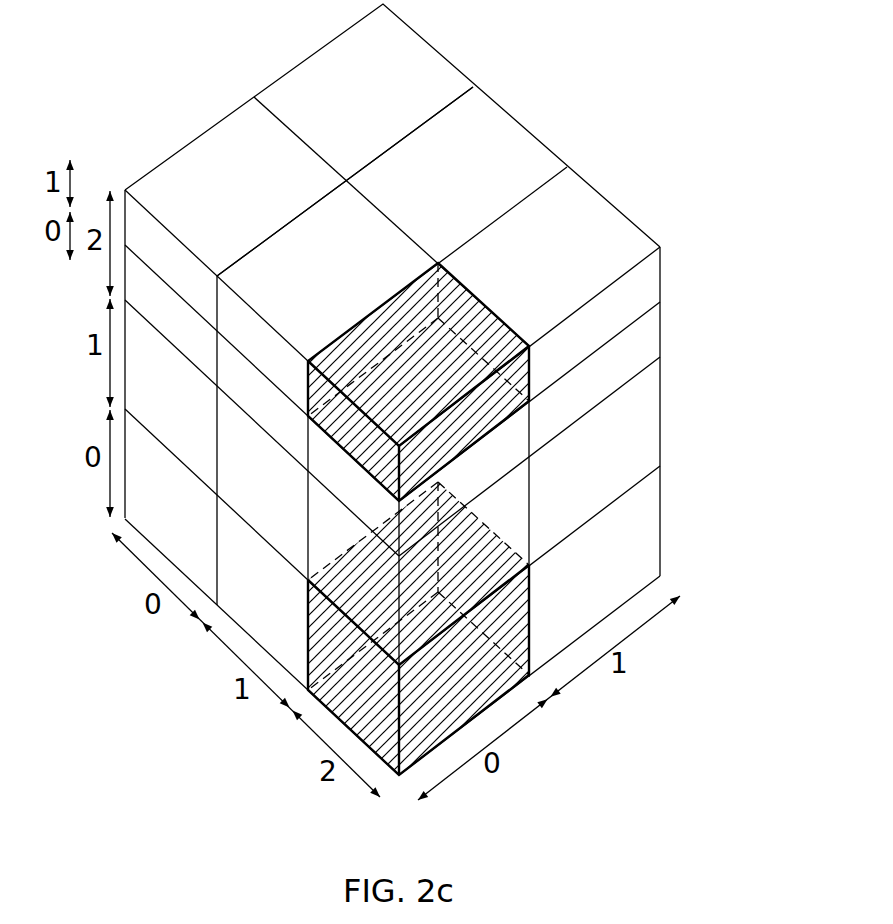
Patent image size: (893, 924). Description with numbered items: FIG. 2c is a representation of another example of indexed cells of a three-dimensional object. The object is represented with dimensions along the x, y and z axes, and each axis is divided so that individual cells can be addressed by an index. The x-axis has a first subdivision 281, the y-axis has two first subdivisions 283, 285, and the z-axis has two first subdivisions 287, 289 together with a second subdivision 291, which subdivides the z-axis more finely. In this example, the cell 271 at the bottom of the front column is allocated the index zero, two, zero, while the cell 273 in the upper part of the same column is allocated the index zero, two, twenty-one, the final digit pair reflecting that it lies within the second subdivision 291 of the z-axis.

The cell 271 is at (490, 643).
The cell 273 is at (477, 413).
The first subdivision of the x-axis 281 is at (498, 303).
The first subdivision of the y-axis 283 is at (280, 227).
The first subdivision of the y-axis 285 is at (512, 204).
The first subdivision of the z-axis 287 is at (640, 480).
The first subdivision of the z-axis 289 is at (640, 372).
The second subdivision of the z-axis 291 is at (640, 316).